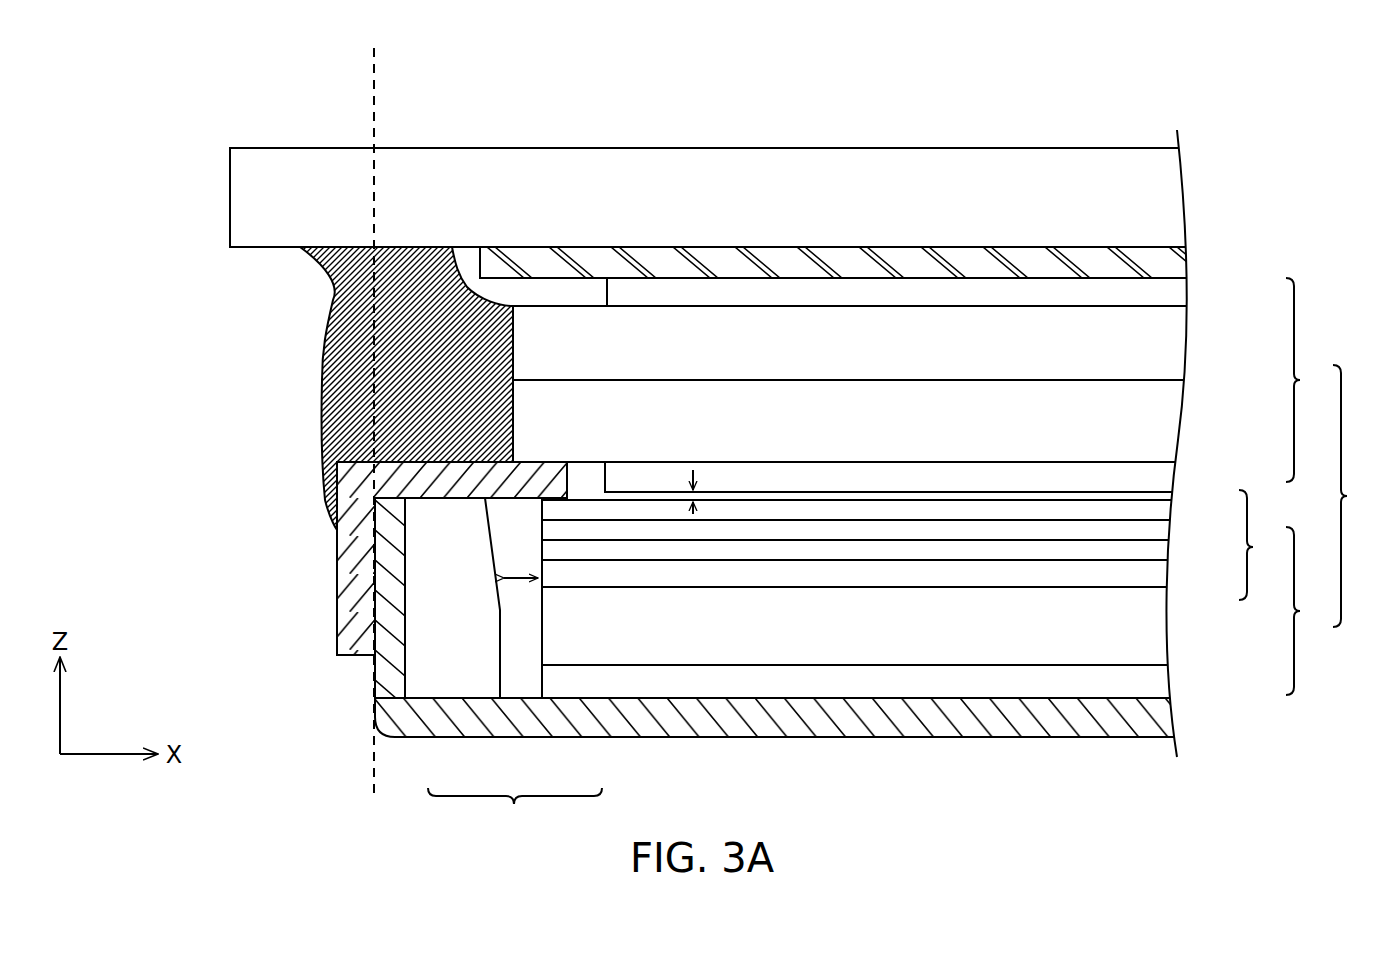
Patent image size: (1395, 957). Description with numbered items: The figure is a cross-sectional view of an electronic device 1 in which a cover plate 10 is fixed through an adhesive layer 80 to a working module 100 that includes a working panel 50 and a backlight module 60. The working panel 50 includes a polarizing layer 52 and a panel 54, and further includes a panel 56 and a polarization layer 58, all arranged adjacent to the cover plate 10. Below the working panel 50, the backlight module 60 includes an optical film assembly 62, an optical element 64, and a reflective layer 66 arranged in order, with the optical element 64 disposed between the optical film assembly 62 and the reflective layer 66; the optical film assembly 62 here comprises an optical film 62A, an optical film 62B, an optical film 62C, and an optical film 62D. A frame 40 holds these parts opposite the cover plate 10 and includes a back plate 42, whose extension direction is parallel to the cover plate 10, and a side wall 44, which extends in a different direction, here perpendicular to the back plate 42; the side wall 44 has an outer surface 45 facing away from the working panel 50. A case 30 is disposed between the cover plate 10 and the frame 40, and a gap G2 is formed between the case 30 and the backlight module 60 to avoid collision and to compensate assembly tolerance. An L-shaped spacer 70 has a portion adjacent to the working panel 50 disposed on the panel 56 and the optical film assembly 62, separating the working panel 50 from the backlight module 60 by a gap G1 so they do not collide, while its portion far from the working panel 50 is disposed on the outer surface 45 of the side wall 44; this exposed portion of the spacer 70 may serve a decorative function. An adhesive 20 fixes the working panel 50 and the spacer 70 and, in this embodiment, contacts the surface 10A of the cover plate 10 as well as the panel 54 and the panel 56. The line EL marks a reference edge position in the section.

The electronic device 1 is at (205, 117).
The cover plate 10 is at (1152, 198).
The surface of the cover plate 10A is at (258, 250).
The adhesive 20 is at (360, 313).
The case 30 is at (455, 555).
The frame 40 is at (515, 811).
The back plate 42 is at (575, 718).
The side wall 44 is at (392, 622).
The outer surface 45 is at (372, 597).
The working panel 50 is at (1307, 380).
The polarizing layer 52 is at (1158, 292).
The panel 54 is at (1150, 345).
The panel 56 is at (1152, 418).
The polarization layer 58 is at (1140, 475).
The backlight module 60 is at (1310, 611).
The optical film assembly 62 is at (1263, 545).
The optical film 62A is at (1142, 512).
The optical film 62B is at (1135, 532).
The optical film 62C is at (1135, 554).
The optical film 62D is at (1135, 577).
The optical element 64 is at (1117, 628).
The reflective layer 66 is at (1117, 683).
The spacer 70 is at (345, 488).
The adhesive layer 80 is at (1125, 258).
The working module 100 is at (1362, 496).
The gap G1 is at (697, 513).
The gap G2 is at (520, 564).
The edge line EL is at (374, 444).